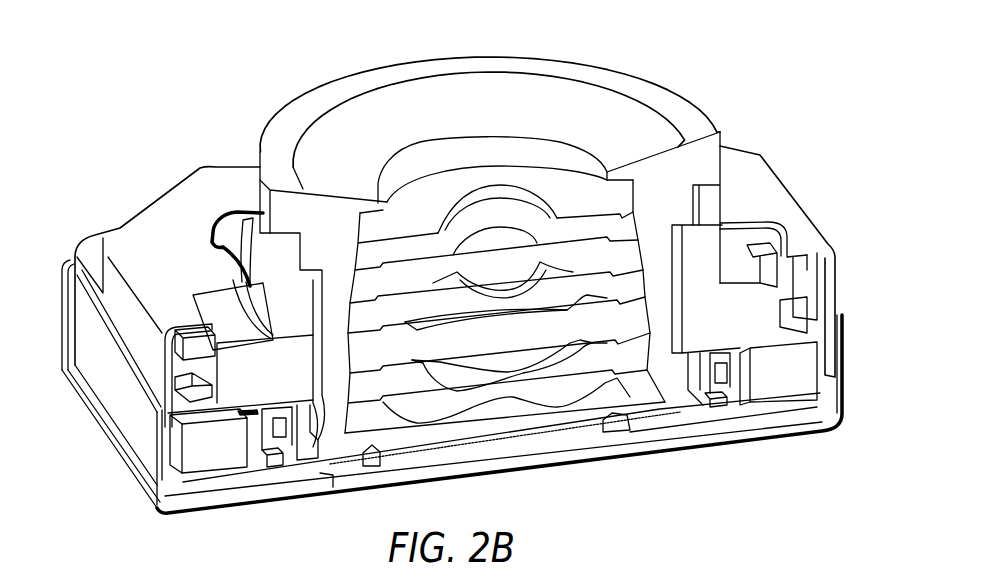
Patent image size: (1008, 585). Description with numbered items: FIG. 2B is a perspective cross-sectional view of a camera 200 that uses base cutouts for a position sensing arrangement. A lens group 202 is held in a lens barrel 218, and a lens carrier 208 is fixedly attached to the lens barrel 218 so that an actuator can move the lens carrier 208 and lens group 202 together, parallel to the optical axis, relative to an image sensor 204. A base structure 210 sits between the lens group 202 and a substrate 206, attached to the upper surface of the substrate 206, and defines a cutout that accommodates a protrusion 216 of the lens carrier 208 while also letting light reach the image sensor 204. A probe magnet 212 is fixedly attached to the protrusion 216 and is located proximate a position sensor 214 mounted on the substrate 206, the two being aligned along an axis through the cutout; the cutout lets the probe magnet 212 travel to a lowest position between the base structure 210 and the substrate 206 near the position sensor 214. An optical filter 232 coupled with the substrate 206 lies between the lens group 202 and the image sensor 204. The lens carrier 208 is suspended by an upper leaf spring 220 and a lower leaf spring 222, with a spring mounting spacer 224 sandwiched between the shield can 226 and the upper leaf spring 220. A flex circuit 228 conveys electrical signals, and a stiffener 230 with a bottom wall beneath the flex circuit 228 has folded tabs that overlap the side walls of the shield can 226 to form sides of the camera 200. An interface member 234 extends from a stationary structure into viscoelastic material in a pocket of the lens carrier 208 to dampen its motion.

The camera 200 is at (162, 88).
The lens group 202 is at (536, 154).
The image sensor 204 is at (590, 445).
The substrate 206 is at (763, 423).
The lens carrier 208 is at (742, 324).
The base structure 210 is at (231, 462).
The probe magnet 212 is at (266, 466).
The position sensor 214 is at (278, 433).
The protrusion 216 is at (740, 367).
The lens barrel 218 is at (702, 148).
The upper leaf spring 220 is at (240, 270).
The lower leaf spring 222 is at (250, 409).
The spring mounting spacer 224 is at (190, 345).
The shield can 226 is at (128, 237).
The flex circuit 228 is at (702, 451).
The stiffener 230 is at (110, 418).
The optical filter 232 is at (485, 433).
The interface member 234 is at (248, 232).